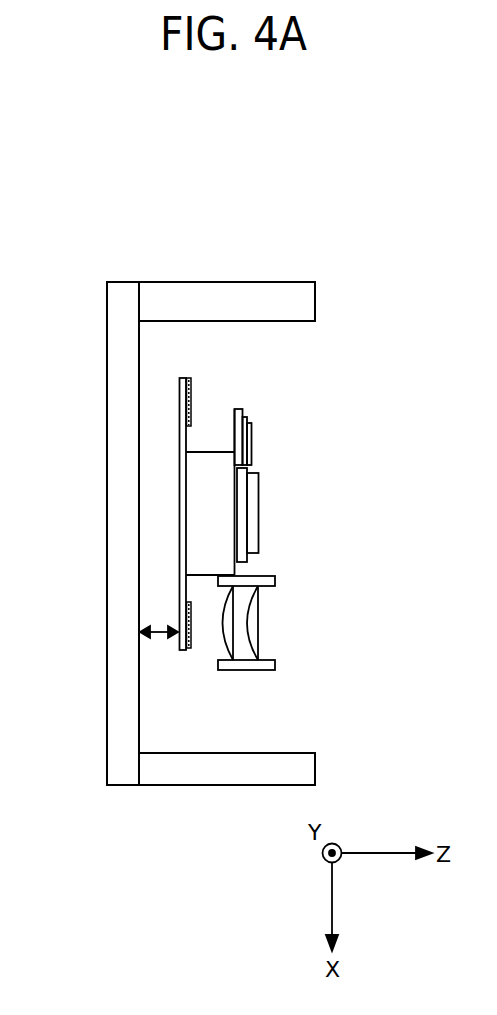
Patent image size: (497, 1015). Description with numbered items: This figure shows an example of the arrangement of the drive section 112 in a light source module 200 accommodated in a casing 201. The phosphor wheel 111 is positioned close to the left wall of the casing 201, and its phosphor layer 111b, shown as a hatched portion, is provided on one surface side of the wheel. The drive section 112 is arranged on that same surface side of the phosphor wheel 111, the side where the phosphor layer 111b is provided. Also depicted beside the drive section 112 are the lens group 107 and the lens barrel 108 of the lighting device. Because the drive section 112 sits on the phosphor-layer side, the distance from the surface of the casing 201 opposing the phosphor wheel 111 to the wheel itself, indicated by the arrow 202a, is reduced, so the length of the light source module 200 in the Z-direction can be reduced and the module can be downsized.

The light source module 200 is at (87, 216).
The casing 201 is at (123, 732).
The arrow 202a is at (160, 638).
The phosphor wheel 111 is at (180, 594).
The phosphor layer 111b is at (190, 398).
The drive section 112 is at (200, 483).
The lens barrel 108 is at (257, 579).
The lens group 107 is at (259, 632).